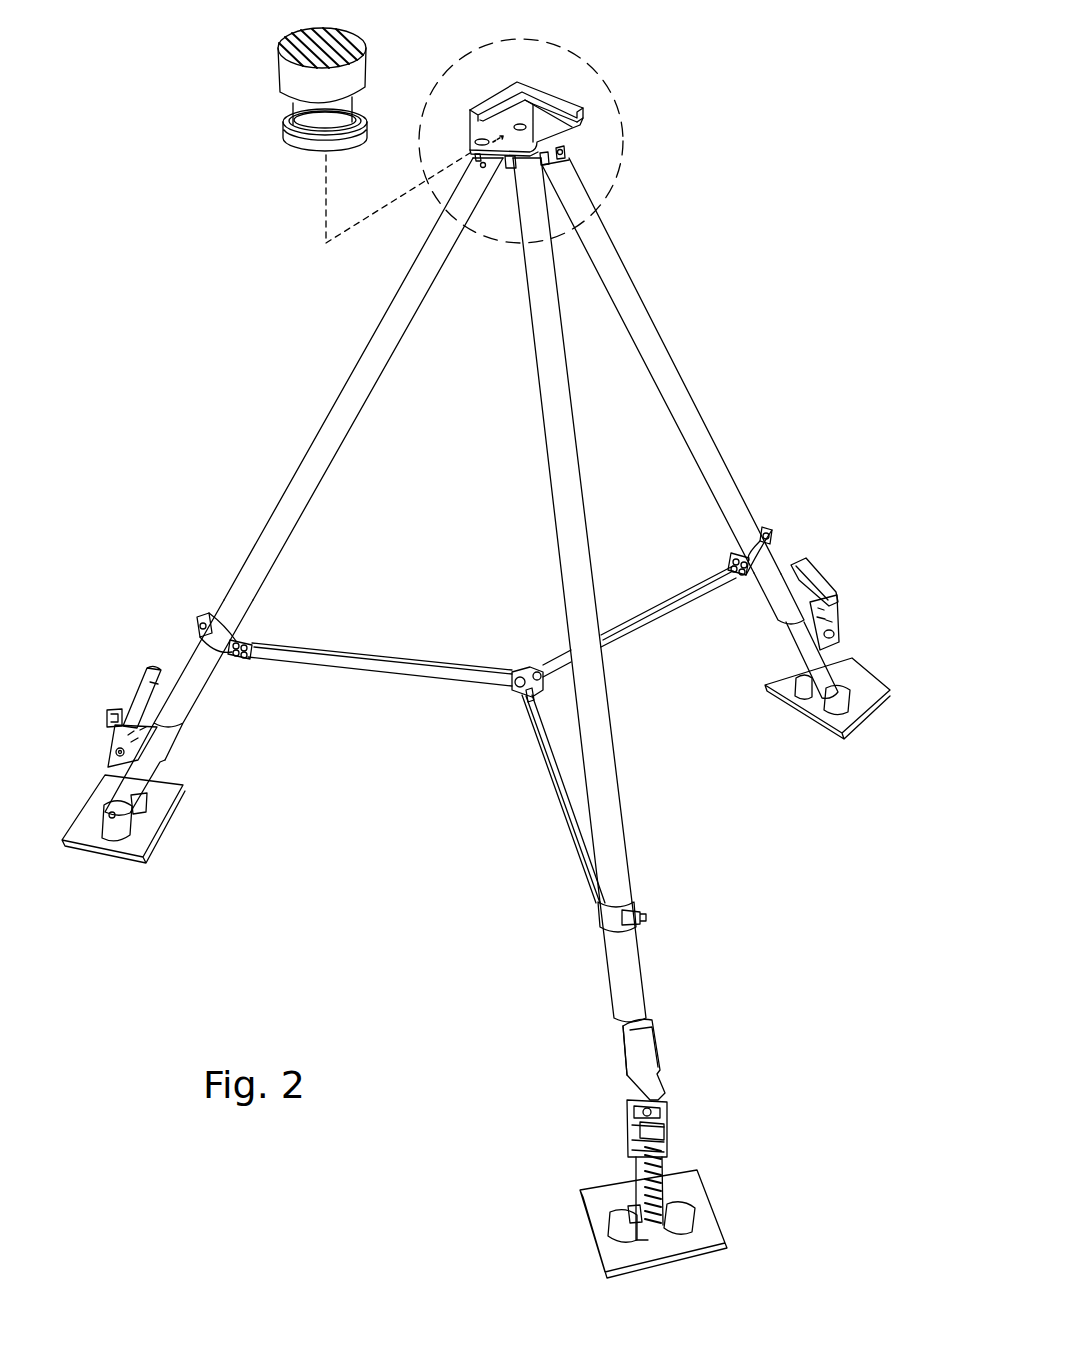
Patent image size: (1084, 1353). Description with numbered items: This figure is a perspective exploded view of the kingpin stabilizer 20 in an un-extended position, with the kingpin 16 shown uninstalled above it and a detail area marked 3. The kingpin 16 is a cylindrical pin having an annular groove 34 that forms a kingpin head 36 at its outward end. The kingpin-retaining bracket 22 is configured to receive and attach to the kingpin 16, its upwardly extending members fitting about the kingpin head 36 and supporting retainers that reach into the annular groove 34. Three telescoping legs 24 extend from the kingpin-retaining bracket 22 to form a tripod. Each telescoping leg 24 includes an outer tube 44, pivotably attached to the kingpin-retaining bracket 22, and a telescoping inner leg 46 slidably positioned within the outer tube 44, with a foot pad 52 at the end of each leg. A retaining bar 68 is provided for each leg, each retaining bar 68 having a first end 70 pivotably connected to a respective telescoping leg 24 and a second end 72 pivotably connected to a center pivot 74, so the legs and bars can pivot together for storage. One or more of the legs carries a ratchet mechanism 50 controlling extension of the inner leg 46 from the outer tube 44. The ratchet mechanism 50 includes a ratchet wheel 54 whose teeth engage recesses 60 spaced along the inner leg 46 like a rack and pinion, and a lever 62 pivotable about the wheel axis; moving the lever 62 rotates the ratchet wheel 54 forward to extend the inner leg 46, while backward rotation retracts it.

The detail view circle 3 is at (612, 97).
The kingpin 16 is at (279, 73).
The kingpin stabilizer 20 is at (293, 362).
The kingpin-retaining bracket 22 is at (590, 111).
The telescoping legs 24 is at (364, 409).
The annular groove 34 is at (312, 118).
The kingpin head 36 is at (293, 150).
The outer tube 44 is at (231, 590).
The telescoping inner leg 46 is at (160, 783).
The ratchet mechanism 50 is at (115, 710).
The foot pad 52 is at (180, 831).
The ratchet wheel 54 is at (668, 1127).
The recesses 60 is at (672, 1172).
The lever 62 is at (652, 1046).
The retaining bar 68 is at (355, 672).
The first end 70 is at (262, 640).
The second end 72 is at (498, 672).
The center pivot 74 is at (520, 699).